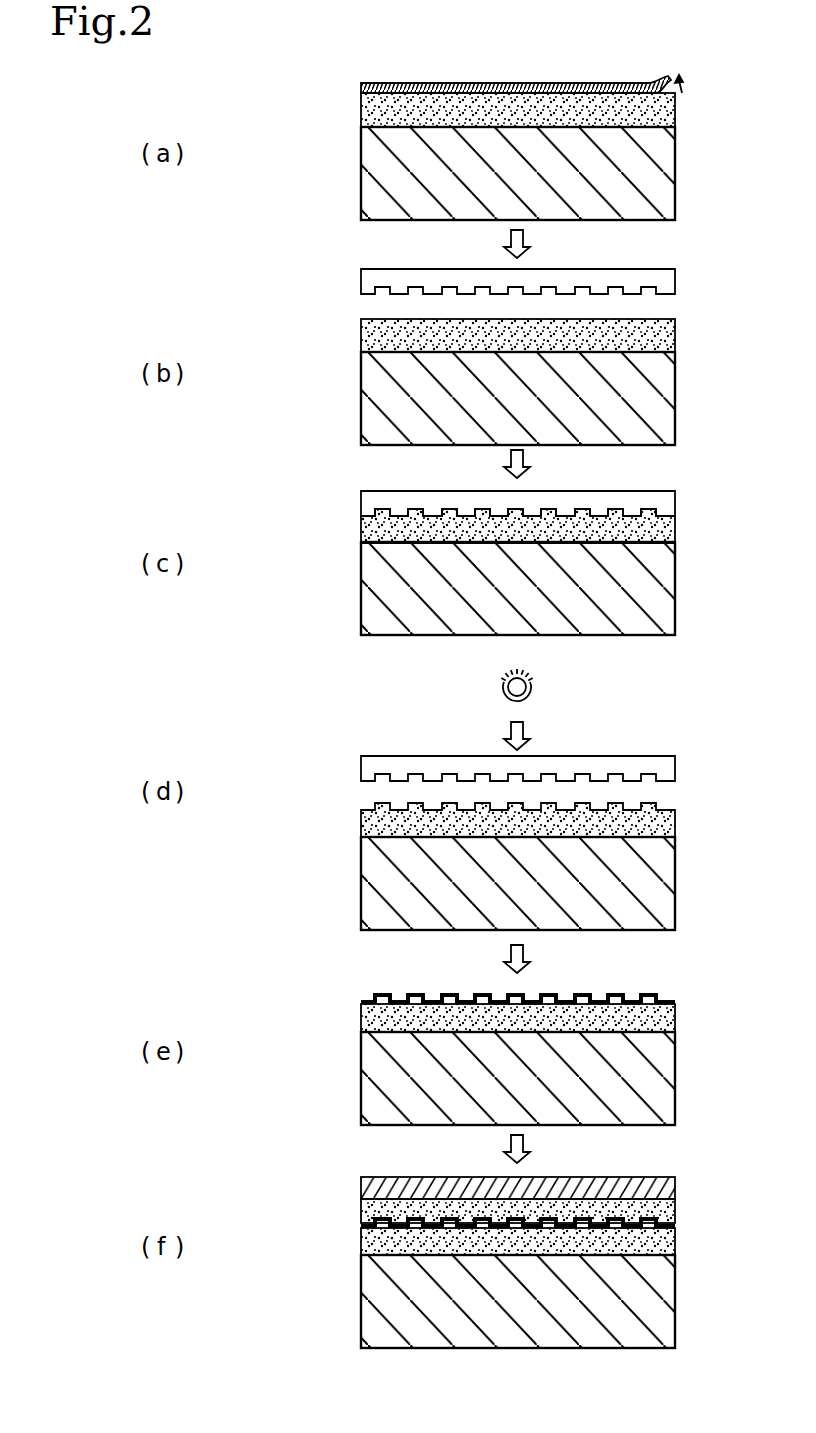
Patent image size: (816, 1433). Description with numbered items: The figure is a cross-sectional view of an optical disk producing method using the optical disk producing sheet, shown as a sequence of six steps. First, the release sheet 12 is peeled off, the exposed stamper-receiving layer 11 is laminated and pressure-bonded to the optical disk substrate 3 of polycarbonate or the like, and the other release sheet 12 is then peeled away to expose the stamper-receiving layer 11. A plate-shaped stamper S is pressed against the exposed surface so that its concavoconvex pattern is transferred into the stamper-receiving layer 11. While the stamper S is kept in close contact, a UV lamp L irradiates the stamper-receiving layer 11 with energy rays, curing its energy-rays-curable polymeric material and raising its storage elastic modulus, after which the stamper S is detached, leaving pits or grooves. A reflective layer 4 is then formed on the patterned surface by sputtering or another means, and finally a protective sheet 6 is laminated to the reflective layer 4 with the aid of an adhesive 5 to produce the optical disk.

The optical disk substrate 3 is at (672, 161).
The stamper-receiving layer 11 is at (675, 115).
The release sheet 12 is at (550, 84).
The stamper S is at (672, 283).
The UV lamp L is at (547, 689).
The reflective layer 4 is at (663, 1000).
The adhesive 5 is at (675, 1213).
The protective sheet 6 is at (675, 1190).